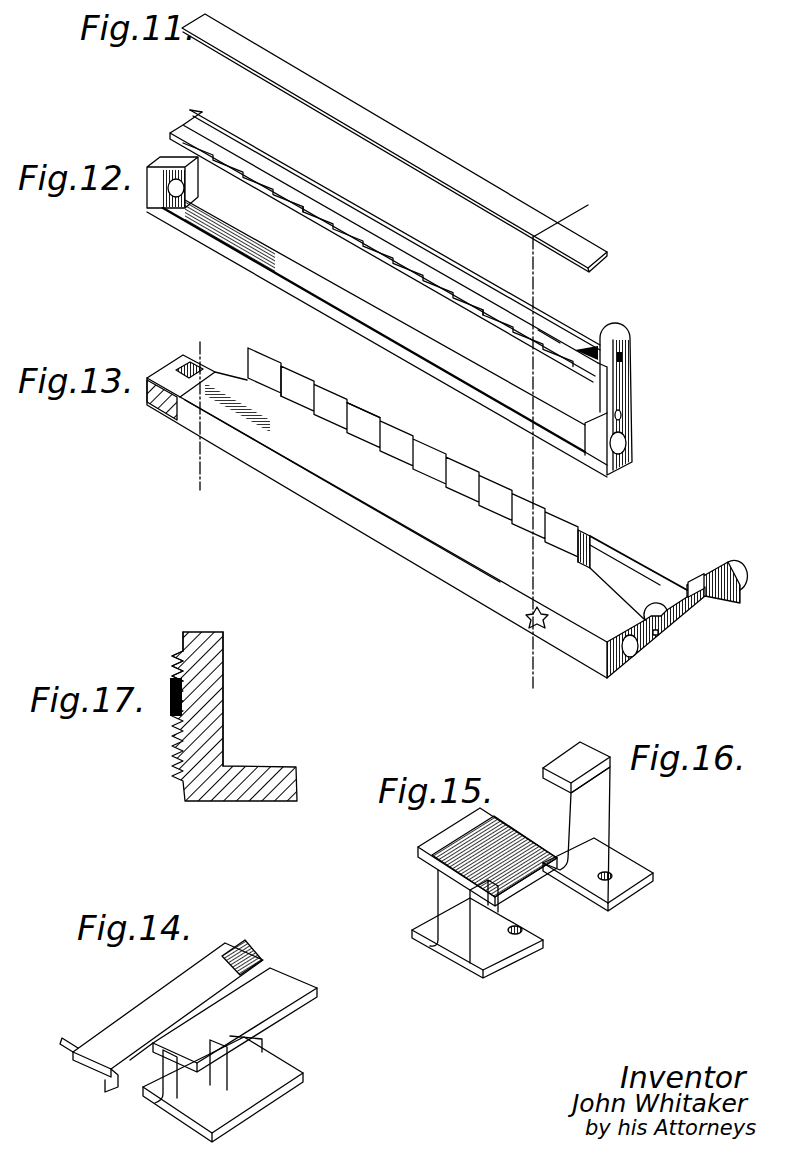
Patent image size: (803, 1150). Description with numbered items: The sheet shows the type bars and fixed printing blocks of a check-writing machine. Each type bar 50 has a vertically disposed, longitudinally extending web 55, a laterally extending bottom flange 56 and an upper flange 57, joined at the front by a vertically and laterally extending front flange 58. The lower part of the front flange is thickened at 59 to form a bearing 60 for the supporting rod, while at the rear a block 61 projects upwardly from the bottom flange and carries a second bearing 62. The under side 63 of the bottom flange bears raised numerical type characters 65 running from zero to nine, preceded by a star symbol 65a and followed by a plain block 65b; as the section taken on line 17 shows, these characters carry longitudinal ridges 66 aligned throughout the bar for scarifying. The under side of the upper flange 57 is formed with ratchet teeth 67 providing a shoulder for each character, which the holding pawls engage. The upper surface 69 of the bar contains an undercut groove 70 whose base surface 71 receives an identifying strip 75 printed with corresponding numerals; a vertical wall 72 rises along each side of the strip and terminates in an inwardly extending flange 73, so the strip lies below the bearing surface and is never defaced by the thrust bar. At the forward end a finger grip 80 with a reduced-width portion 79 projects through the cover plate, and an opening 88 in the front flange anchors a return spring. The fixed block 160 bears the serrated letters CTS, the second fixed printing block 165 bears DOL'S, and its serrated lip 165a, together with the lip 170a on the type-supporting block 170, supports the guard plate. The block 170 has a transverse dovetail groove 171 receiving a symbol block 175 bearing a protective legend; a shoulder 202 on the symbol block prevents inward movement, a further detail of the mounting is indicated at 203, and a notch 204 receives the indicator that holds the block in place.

In FIG. 13, the section line 17— 17 is at (200, 343).
In FIG. 12, the type bar 50 is at (397, 287).
In FIG. 13, the type bar 50 is at (445, 508).
In FIG. 12, the web 55 is at (398, 293).
In FIG. 17, the web 55 is at (278, 766).
In FIG. 12, the bottom flange 56 is at (393, 338).
In FIG. 13, the bottom flange 56 is at (372, 500).
In FIG. 17, the bottom flange 56 is at (224, 715).
In FIG. 12, the upper flange 57 is at (262, 182).
In FIG. 13, the upper flange 57 is at (405, 433).
In FIG. 12, the front flange 58 is at (606, 388).
In FIG. 13, the front flange 58 is at (664, 600).
In FIG. 12, the thickened portion 59 is at (583, 446).
In FIG. 12, the bearing 60 is at (632, 441).
In FIG. 13, the bearing 60 is at (630, 646).
In FIG. 12, the block 61 is at (153, 187).
In FIG. 13, the block 61 is at (172, 367).
In FIG. 12, the bearing 62 is at (163, 208).
In FIG. 13, the bearing 62 is at (189, 370).
In FIG. 13, the under side 63 is at (353, 513).
In FIG. 17, the under side 63 is at (183, 641).
In FIG. 13, the numerical type characters 65 is at (303, 497).
In FIG. 17, the numerical type characters 65 is at (178, 783).
In FIG. 13, the symbol 65a is at (532, 627).
In FIG. 13, the plain block 65b is at (163, 410).
In FIG. 17, the ridges 66 is at (172, 651).
In FIG. 13, the ratchet teeth 67 is at (367, 432).
In FIG. 12, the upper surface 69 is at (200, 113).
In FIG. 12, the undercut groove 70 is at (378, 230).
In FIG. 12, the base surface 71 is at (200, 117).
In FIG. 12, the vertical wall 72 is at (580, 360).
In FIG. 12, the flange 73 is at (538, 330).
In FIG. 11, the strip 75 is at (392, 124).
In FIG. 12, the reduced-width portion 79 is at (623, 358).
In FIG. 13, the reduced-width portion 79 is at (703, 613).
In FIG. 12, the finger grip 80 is at (622, 324).
In FIG. 13, the finger grip 80 is at (720, 574).
In FIG. 13, the opening 88 is at (658, 636).
In FIG. 16, the fixed block 160 is at (612, 811).
In FIG. 15, the second fixed printing block 165 is at (432, 892).
In FIG. 15, the lip 165a is at (515, 880).
In FIG. 14, the type-supporting block 170 is at (282, 978).
In FIG. 14, the lip 170a is at (270, 1015).
In FIG. 14, the dovetail groove 171 is at (237, 960).
In FIG. 14, the symbol block 175 is at (102, 1052).
In FIG. 14, the shoulder 202 is at (128, 1073).
In FIG. 14, the rib 203 is at (167, 1043).
In FIG. 14, the notch 204 is at (92, 1042).